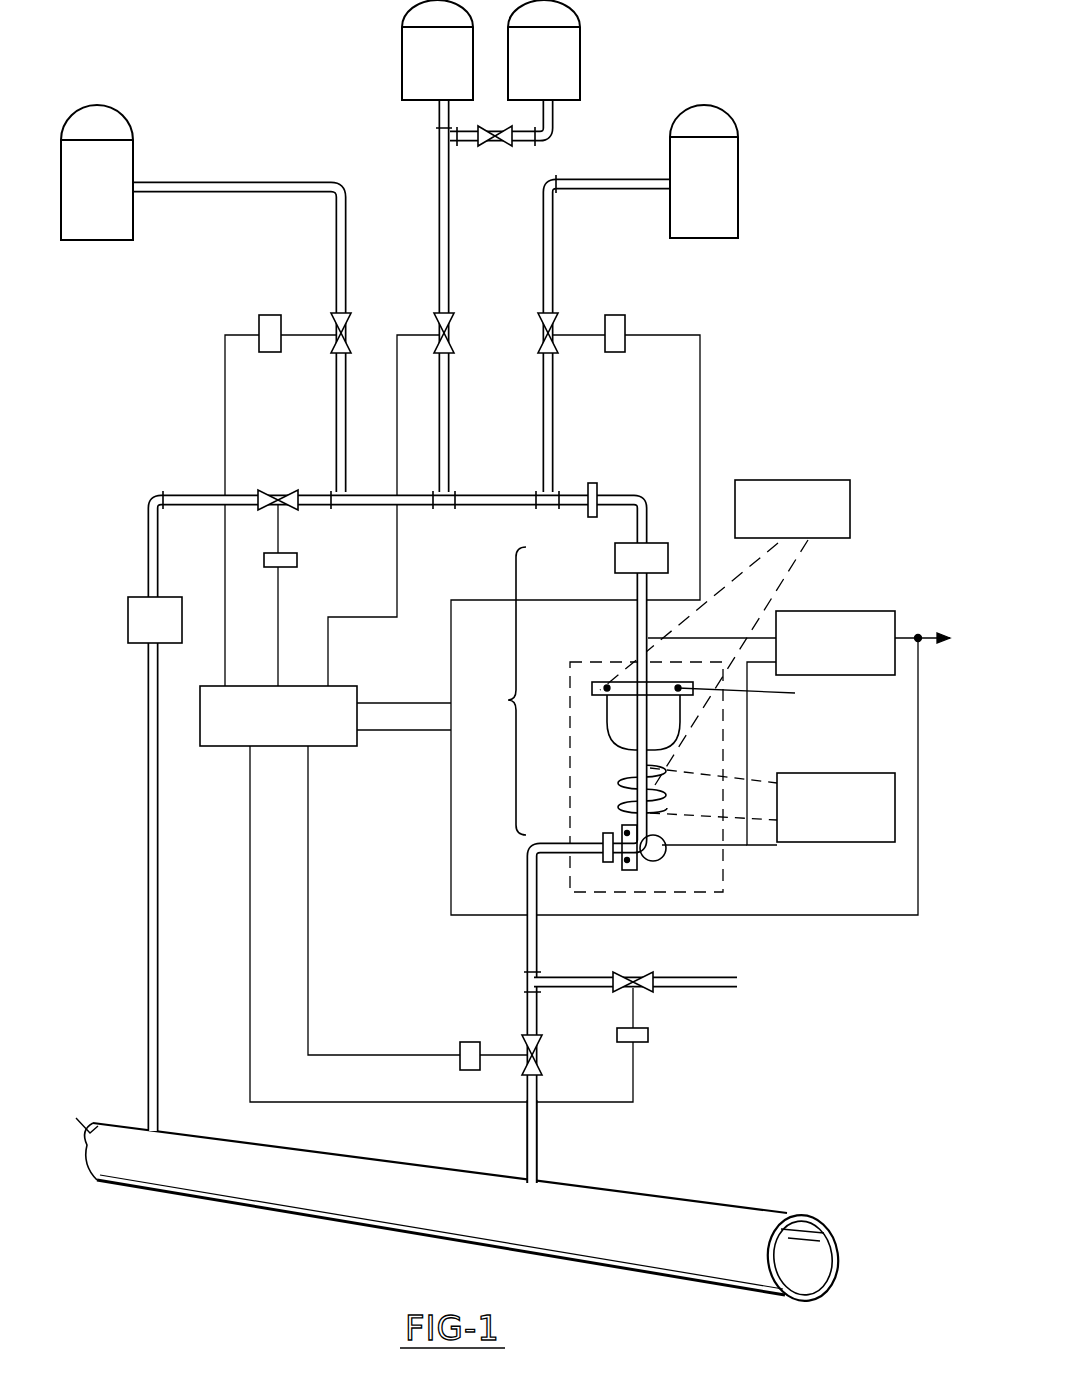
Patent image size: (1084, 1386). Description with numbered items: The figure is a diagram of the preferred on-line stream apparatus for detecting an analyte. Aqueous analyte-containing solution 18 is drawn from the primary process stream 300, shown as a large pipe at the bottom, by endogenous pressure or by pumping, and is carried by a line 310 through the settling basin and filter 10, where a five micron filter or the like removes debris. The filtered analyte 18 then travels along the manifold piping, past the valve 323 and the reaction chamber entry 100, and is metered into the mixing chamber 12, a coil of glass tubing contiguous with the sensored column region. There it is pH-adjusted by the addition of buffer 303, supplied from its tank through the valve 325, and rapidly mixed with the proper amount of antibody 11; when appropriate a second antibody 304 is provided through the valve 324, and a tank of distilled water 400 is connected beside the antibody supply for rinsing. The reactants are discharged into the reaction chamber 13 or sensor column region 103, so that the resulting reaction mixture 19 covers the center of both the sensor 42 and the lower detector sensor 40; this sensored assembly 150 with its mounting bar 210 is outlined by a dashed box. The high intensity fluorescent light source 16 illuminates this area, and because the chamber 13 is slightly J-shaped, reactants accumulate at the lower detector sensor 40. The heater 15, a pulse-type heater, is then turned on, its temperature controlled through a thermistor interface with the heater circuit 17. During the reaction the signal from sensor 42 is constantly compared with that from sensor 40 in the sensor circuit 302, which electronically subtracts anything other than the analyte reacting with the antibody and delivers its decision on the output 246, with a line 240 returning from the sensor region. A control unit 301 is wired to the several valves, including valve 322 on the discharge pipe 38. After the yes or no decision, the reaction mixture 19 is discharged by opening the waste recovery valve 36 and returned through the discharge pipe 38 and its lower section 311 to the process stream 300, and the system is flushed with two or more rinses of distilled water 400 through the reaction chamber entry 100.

The settling basin and filter 10 is at (130, 598).
The antibody 11 is at (400, 70).
The mixing chamber 12 is at (657, 543).
The reaction chamber 13 is at (637, 627).
The heater 15 is at (630, 786).
The high intensity fluorescent light source 16 is at (790, 480).
The heater circuit 17 is at (842, 773).
The aqueous analyte-containing solution 18 is at (813, 1250).
The reaction mixture 19 is at (640, 593).
The waste recovery valve 36 is at (648, 988).
The injection pipe 38 is at (587, 883).
The lower detector sensor 40 is at (626, 832).
The sensor 42 is at (590, 698).
The reaction chamber entry 100 is at (597, 483).
The sensor column region 103 is at (652, 778).
The injector assembly 150 is at (508, 700).
The mounting plate 210 is at (607, 688).
The sensor line 240 is at (765, 695).
The output signal 246 is at (906, 636).
The primary process stream 300 is at (345, 1203).
The control unit 301 is at (332, 748).
The sensor circuit 302 is at (840, 612).
The buffer 303 is at (133, 152).
The second antibody 304 is at (740, 188).
The bypass pipe 310 is at (148, 1050).
The injection line 311 is at (538, 1157).
The valve 322 is at (542, 1055).
The valve 323 is at (281, 495).
The valve 324 is at (542, 328).
The valve 325 is at (338, 328).
The distilled water 400 is at (580, 68).